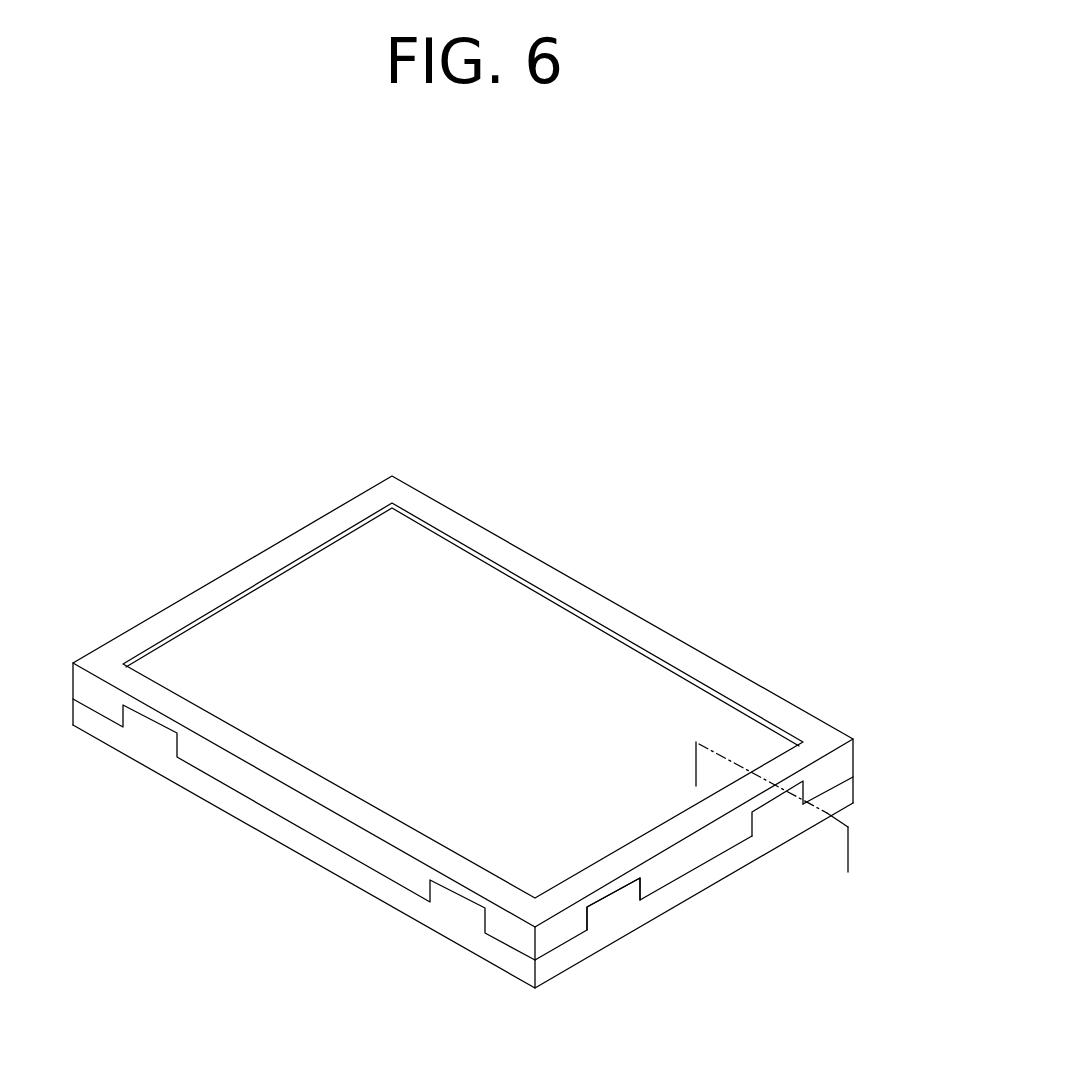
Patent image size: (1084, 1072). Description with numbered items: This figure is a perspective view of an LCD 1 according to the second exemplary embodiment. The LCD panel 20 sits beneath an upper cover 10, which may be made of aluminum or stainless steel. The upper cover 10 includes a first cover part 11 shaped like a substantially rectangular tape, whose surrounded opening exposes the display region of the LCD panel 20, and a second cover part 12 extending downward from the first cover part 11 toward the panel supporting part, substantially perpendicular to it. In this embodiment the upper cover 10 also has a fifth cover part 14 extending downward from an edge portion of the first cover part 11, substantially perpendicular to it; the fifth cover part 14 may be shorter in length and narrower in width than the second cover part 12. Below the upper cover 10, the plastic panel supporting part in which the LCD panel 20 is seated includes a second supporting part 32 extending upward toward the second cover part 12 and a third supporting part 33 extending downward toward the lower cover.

The LCD 1 is at (812, 443).
The upper cover 10 is at (480, 522).
The first cover part 11 is at (280, 543).
The second cover part 12 is at (855, 760).
The fifth cover part 14 is at (771, 800).
The LCD panel 20 is at (577, 638).
The second supporting part 32 is at (617, 902).
The third supporting part 33 is at (717, 883).